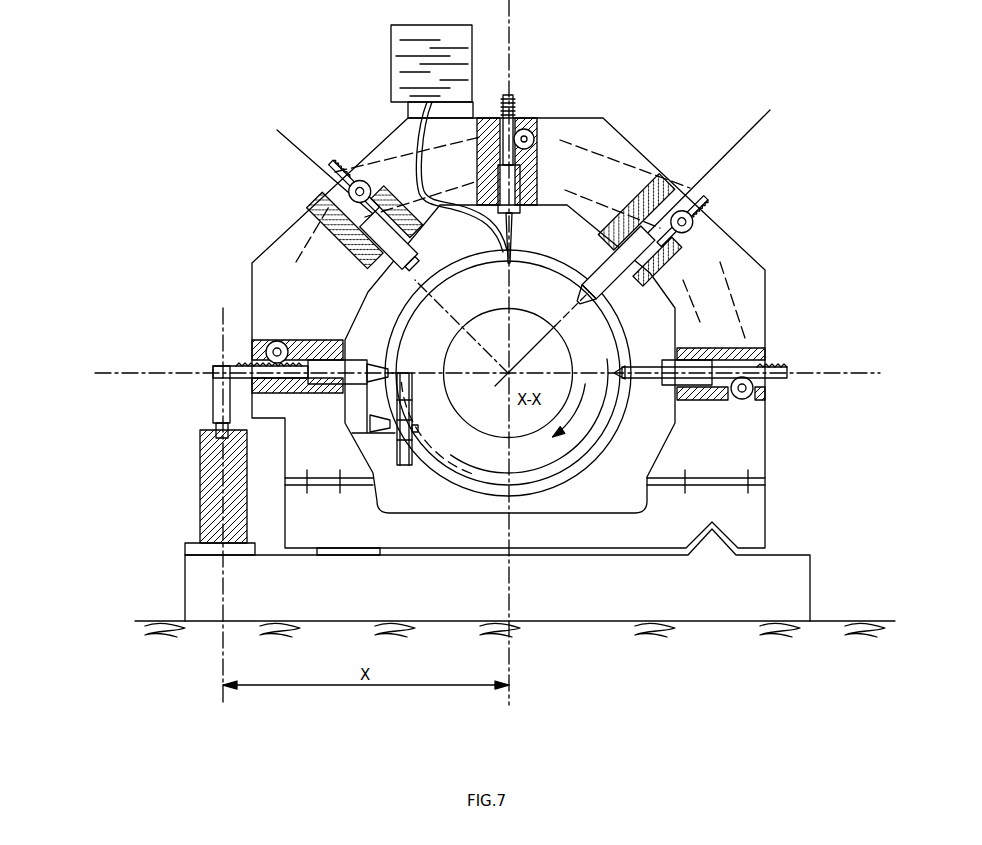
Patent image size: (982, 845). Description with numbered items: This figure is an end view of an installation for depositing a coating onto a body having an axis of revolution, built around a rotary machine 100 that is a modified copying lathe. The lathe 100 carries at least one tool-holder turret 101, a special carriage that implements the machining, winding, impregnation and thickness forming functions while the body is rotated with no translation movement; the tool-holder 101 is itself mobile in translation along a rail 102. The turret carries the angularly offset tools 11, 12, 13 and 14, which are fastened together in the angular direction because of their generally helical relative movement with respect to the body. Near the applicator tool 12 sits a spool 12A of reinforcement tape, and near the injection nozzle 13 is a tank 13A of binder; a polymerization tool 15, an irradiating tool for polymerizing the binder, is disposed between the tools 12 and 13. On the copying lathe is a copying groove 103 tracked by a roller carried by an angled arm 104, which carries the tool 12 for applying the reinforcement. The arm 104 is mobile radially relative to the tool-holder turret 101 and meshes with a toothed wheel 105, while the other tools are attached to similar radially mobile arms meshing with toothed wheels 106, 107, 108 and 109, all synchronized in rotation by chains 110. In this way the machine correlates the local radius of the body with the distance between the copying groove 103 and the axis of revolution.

The rotary machine 100 is at (180, 283).
The tool-holder turret 101 is at (627, 127).
The rail 102 is at (733, 543).
The copying groove 103 is at (200, 468).
The angled arm 104 is at (213, 397).
The toothed wheel 105 is at (272, 340).
The toothed wheel 106 is at (370, 182).
The toothed wheel 107 is at (522, 118).
The toothed wheel 108 is at (690, 215).
The toothed wheel 109 is at (748, 398).
The chains 110 is at (300, 270).
The tool 11 is at (700, 327).
The applicator tool 12 is at (360, 358).
The spool of reinforcement tape 12A is at (398, 470).
The injection nozzle 13 is at (517, 237).
The tank of binder 13A is at (393, 66).
The tool 14 is at (663, 270).
The polymerization tool 15 is at (413, 240).